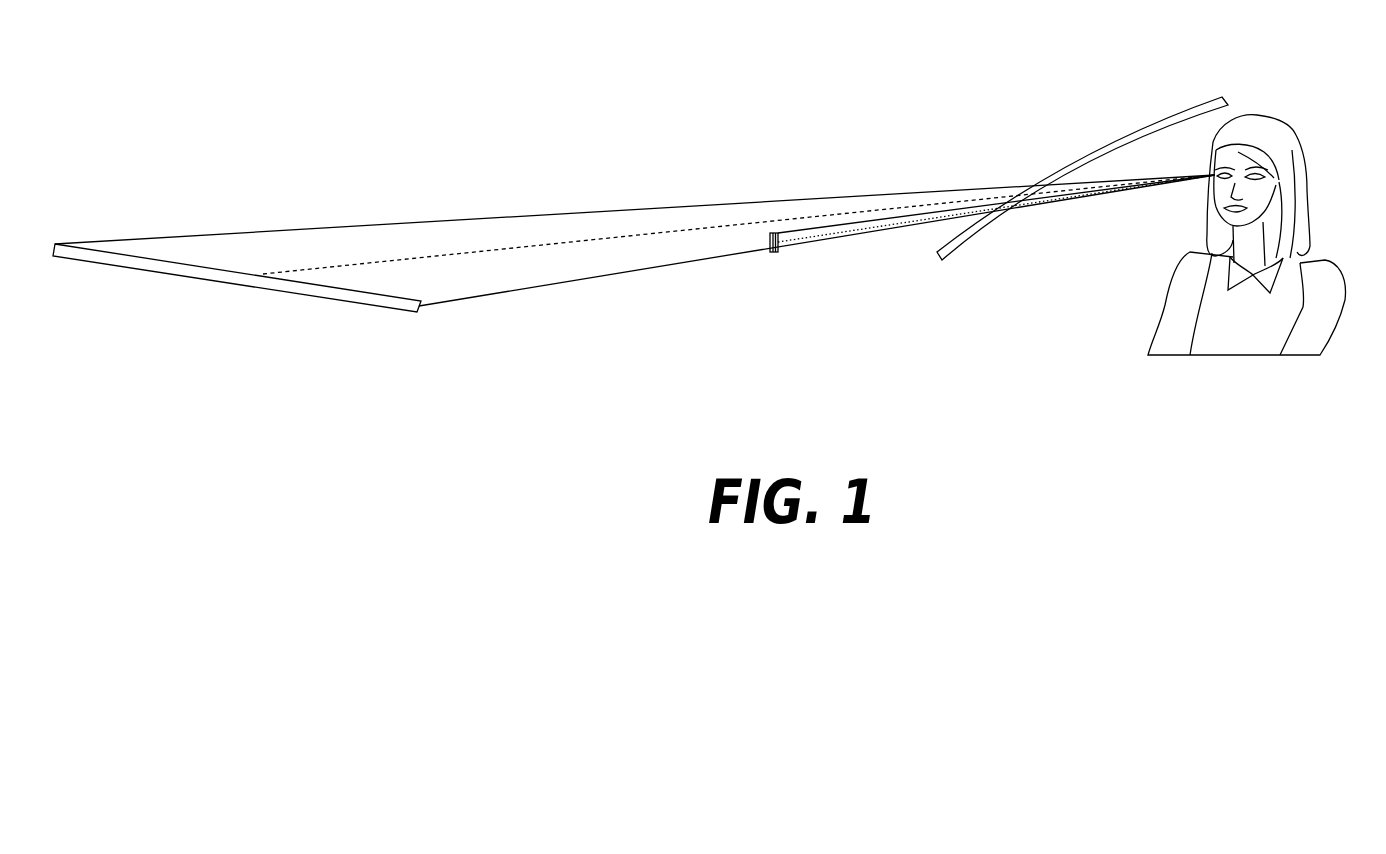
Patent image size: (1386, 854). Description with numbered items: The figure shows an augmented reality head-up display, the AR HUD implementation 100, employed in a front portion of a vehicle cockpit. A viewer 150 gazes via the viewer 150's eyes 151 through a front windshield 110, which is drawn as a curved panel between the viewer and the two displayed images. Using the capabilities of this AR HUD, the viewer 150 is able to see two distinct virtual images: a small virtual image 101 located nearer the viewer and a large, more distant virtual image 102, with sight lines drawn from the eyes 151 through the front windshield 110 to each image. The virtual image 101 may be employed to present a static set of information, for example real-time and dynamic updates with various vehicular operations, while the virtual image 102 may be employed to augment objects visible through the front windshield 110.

The AR HUD implementation 100 is at (1128, 43).
The virtual image 101 is at (768, 243).
The virtual image 102 is at (365, 303).
The front windshield 110 is at (1196, 102).
The viewer 150 is at (1298, 140).
The eyes 151 is at (1263, 180).